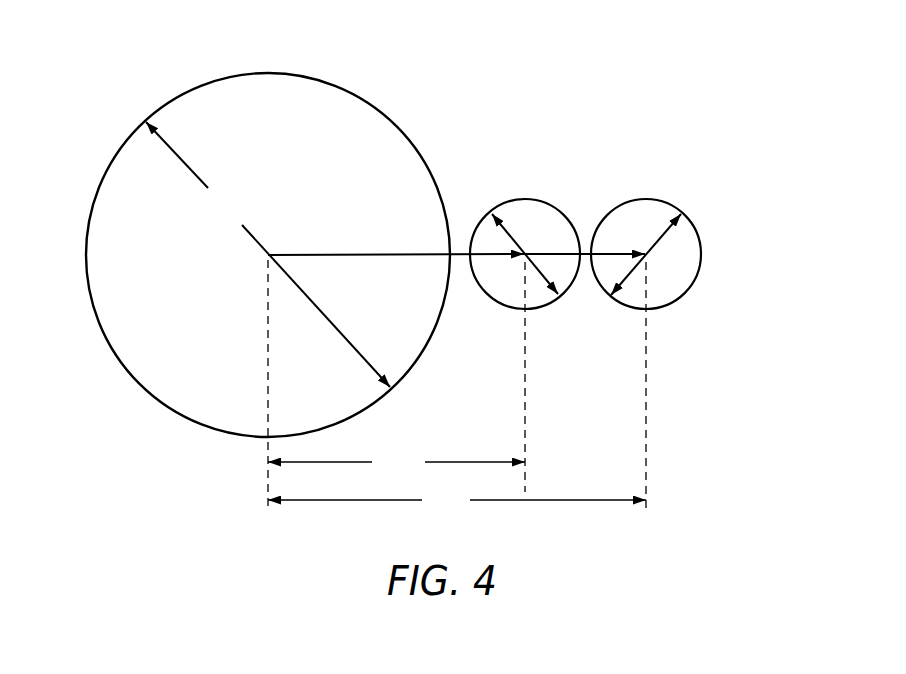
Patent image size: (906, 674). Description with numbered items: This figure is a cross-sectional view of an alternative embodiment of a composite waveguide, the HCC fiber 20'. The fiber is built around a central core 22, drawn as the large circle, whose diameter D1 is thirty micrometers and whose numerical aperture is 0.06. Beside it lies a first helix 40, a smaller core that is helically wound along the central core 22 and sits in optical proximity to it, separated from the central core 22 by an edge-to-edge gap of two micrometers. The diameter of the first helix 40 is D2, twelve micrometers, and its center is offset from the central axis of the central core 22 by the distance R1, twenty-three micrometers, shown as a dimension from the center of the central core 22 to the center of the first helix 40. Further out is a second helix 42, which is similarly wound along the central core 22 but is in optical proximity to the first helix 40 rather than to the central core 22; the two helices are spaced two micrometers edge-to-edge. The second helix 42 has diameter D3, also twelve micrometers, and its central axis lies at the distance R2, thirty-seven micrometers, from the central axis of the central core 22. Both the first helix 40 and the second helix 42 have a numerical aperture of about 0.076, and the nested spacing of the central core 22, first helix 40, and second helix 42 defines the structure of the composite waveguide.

The HCC fiber 20' is at (457, 259).
The central core 22 is at (143, 357).
The first helix 40 is at (553, 240).
The second helix 42 is at (685, 243).
The central core diameter D1 is at (268, 254).
The first helix diameter D2 is at (510, 237).
The second helix diameter D3 is at (660, 242).
The first helix radius from center axis R1 is at (396, 463).
The second helix radius from center axis R2 is at (457, 501).